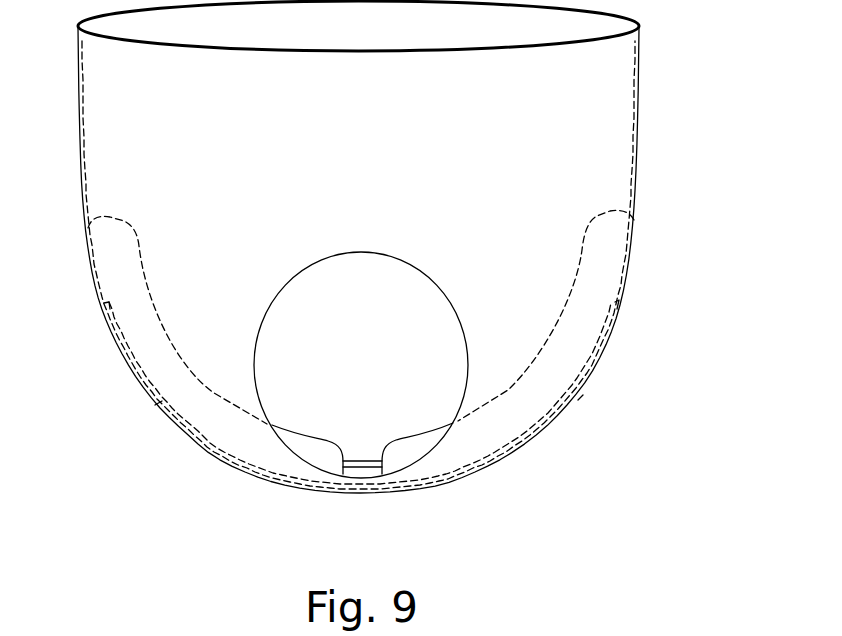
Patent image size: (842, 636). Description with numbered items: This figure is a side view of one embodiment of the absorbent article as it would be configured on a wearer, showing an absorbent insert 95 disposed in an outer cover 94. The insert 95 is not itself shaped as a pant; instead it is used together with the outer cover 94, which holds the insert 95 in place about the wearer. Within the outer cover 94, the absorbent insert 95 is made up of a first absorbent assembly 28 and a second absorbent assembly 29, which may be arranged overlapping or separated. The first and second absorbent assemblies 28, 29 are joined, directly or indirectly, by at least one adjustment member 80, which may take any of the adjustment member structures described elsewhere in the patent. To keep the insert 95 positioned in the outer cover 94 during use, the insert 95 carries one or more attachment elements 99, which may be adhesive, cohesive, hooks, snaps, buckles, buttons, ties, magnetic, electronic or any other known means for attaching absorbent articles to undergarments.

The outer cover 94 is at (614, 153).
The first absorbent assembly 28 is at (612, 230).
The absorbent insert 95 is at (608, 282).
The attachment element 99 is at (118, 350).
The second absorbent assembly 29 is at (228, 430).
The adjustment member 80 is at (357, 468).